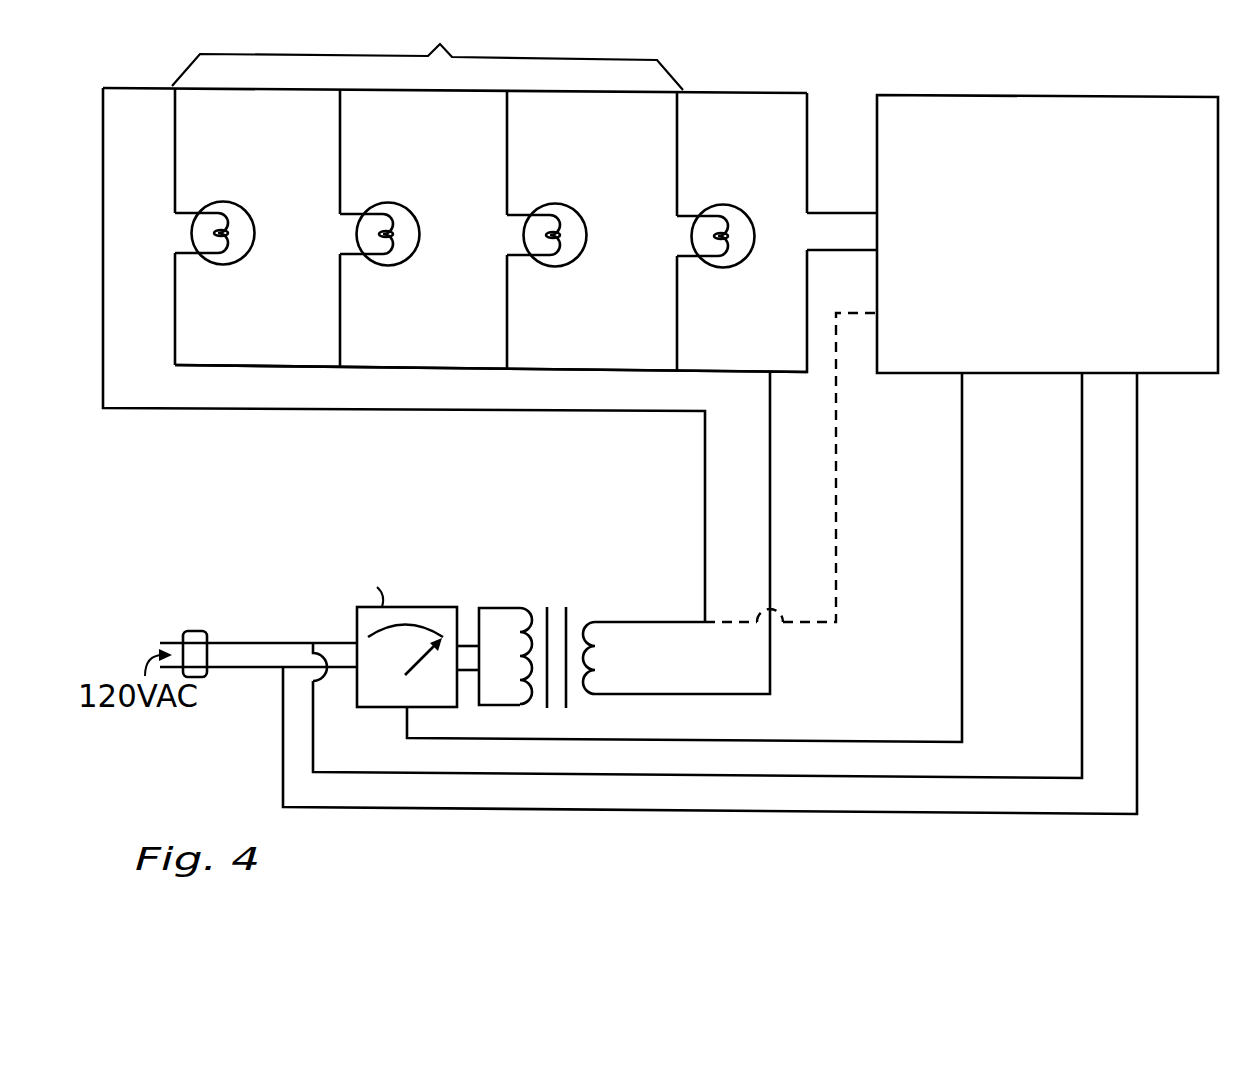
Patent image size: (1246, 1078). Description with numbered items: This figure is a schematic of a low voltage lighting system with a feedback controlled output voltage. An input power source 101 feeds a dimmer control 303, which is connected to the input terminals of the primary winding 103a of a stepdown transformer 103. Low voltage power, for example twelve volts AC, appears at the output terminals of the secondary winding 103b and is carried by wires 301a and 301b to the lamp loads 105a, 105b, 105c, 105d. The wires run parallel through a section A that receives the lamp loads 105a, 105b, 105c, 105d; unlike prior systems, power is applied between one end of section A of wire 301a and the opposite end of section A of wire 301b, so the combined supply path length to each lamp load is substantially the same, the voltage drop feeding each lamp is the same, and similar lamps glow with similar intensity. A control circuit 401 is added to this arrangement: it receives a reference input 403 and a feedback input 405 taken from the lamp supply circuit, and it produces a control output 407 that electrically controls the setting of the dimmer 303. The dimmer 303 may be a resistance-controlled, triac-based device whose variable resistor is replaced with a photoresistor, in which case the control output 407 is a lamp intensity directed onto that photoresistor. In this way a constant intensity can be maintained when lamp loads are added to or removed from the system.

The input power source 101 is at (174, 630).
The stepdown transformer 103 is at (624, 540).
The primary winding 103a is at (528, 602).
The secondary winding 103b is at (604, 613).
The lamp load 105a is at (217, 263).
The lamp load 105b is at (383, 268).
The lamp load 105c is at (547, 268).
The lamp load 105d is at (708, 269).
The wire 301a is at (357, 90).
The wire 301b is at (293, 367).
The dimmer control 303 is at (450, 642).
The control circuit 401 is at (1155, 362).
The reference input 403 is at (1108, 416).
The feedback input 405 is at (864, 209).
The control output 407 is at (949, 383).
The section A is at (427, 46).